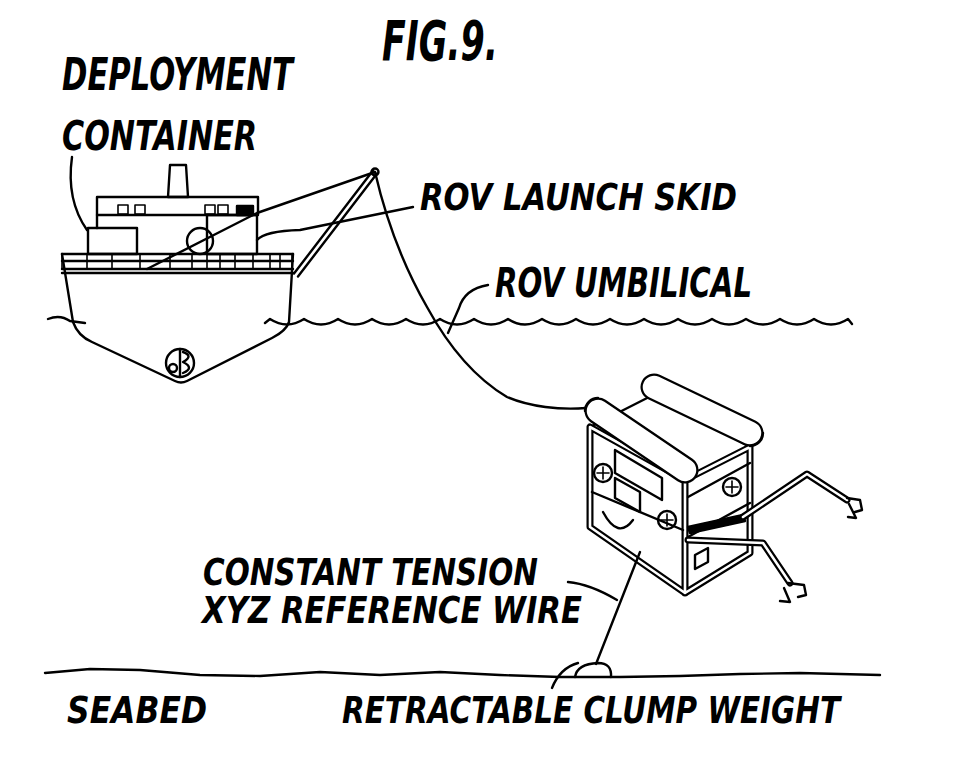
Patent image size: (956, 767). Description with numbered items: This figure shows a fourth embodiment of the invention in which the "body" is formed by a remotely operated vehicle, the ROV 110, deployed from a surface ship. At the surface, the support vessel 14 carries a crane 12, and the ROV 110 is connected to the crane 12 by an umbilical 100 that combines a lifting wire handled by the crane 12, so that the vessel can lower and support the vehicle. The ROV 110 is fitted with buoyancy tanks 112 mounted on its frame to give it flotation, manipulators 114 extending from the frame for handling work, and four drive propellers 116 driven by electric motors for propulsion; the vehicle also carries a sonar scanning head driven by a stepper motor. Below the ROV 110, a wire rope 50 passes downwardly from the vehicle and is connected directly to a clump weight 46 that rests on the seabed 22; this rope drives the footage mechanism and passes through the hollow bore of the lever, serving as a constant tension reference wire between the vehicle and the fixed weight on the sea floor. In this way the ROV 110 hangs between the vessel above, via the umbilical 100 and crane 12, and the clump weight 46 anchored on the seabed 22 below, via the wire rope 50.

The crane 12 is at (331, 215).
The support vessel 14 is at (140, 343).
The seabed 22 is at (287, 648).
The clump weight 46 is at (613, 672).
The wire rope 50 is at (628, 588).
The umbilical 100 is at (404, 254).
The ROV 110 is at (670, 392).
The buoyancy tanks 112 is at (587, 427).
The manipulators 114 is at (792, 580).
The drive propellers 116 is at (640, 513).